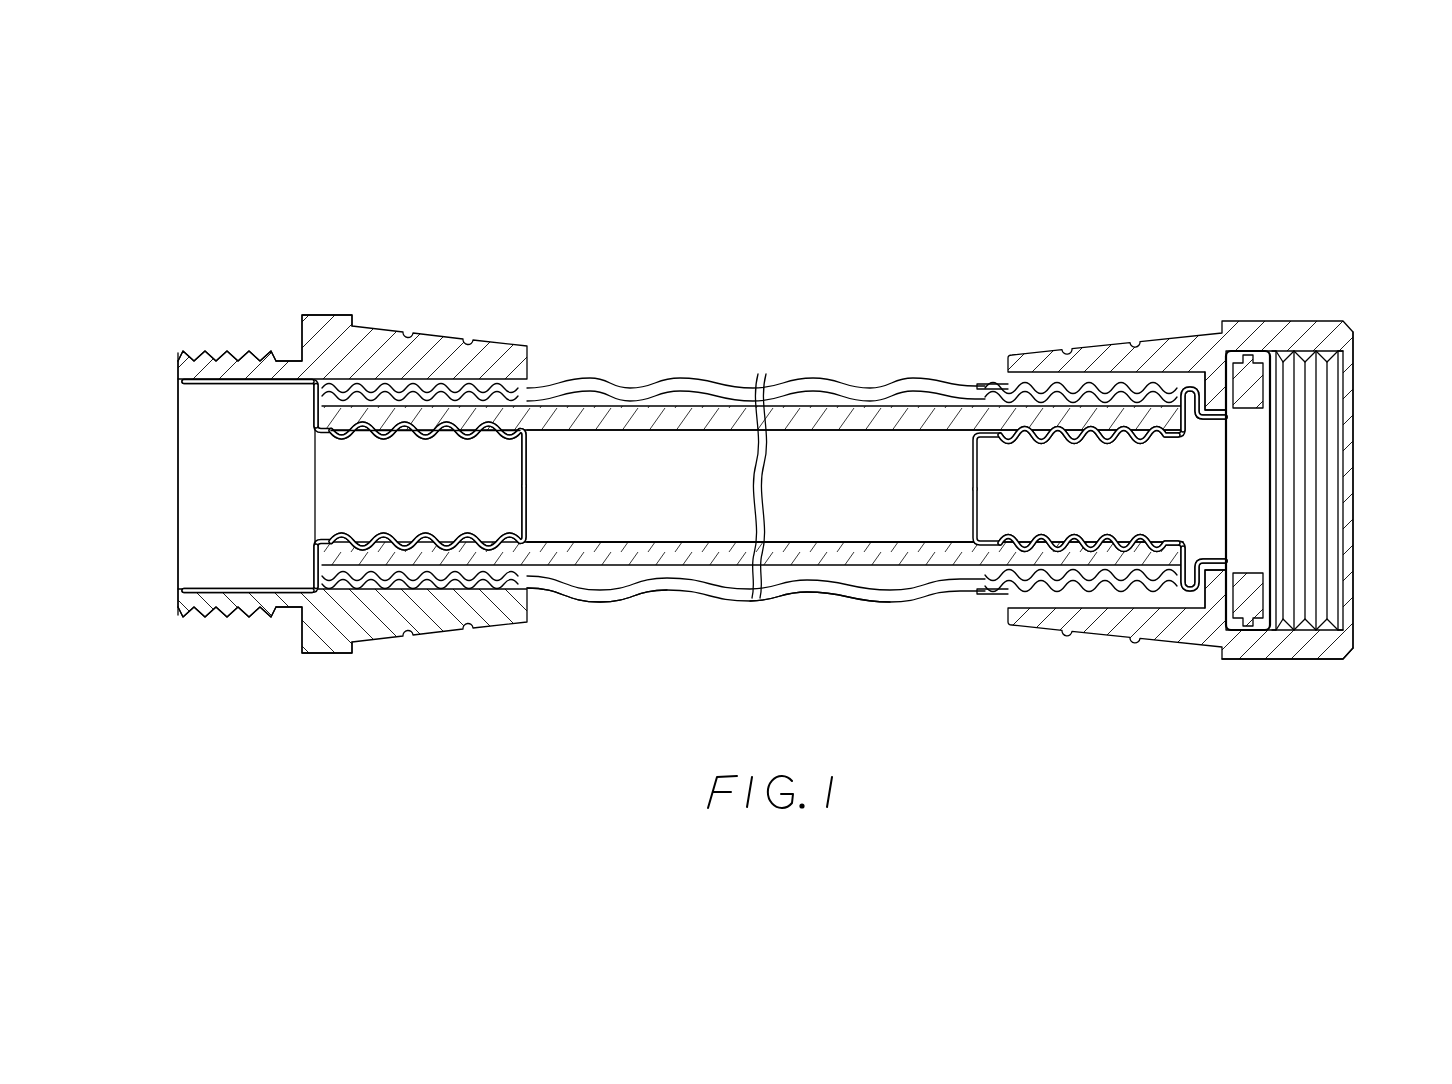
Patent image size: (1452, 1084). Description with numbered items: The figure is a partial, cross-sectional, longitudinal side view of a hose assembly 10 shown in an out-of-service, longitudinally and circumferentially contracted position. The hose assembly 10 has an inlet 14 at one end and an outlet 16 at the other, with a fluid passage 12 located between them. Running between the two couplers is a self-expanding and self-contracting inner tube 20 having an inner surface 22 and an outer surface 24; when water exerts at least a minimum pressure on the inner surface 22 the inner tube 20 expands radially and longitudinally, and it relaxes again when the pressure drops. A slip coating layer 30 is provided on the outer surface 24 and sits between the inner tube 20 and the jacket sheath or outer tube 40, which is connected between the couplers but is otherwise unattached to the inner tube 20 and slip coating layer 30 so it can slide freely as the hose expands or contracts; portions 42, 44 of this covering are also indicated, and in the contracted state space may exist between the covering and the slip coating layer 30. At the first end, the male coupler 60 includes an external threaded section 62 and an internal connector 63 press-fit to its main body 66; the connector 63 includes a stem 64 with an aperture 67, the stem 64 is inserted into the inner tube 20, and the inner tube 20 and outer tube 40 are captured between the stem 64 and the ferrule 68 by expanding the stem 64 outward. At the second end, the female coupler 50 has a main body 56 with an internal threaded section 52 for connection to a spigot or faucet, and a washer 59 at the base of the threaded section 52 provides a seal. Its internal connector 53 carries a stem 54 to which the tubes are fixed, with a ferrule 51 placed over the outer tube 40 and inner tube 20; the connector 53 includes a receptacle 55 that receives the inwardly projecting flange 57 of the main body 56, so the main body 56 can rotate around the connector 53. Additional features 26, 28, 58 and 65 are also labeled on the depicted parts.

The hose assembly 10 is at (752, 440).
The fluid passage 12 is at (588, 503).
The inlet 14 is at (1362, 504).
The outlet 16 is at (165, 512).
The inner tube 20 is at (655, 418).
The inner surface 22 is at (860, 542).
The outer surface 24 is at (893, 406).
The first end of insert 26 is at (314, 553).
The second end of insert 28 is at (1175, 412).
The slip coating layer 30 is at (700, 403).
The outer tube 40 is at (677, 373).
The outer cover portion 42 is at (612, 580).
The outer cover portion 44 is at (815, 597).
The female coupler 50 is at (1288, 300).
The ferrule 51 is at (992, 384).
The internal threaded section 52 is at (1330, 372).
The internal connector 53 is at (1148, 417).
The stem 54 is at (1040, 545).
The receptacle 55 is at (1216, 540).
The main body 56 is at (1285, 656).
The flange 57 is at (1215, 585).
The insert 58 is at (978, 474).
The washer 59 is at (1225, 622).
The male coupler 60 is at (397, 312).
The external threaded section 62 is at (222, 616).
The internal connector 63 is at (432, 420).
The stem 64 is at (335, 439).
The insert 65 is at (354, 418).
The main body 66 is at (330, 640).
The aperture 67 is at (520, 512).
The ferrule 68 is at (486, 383).